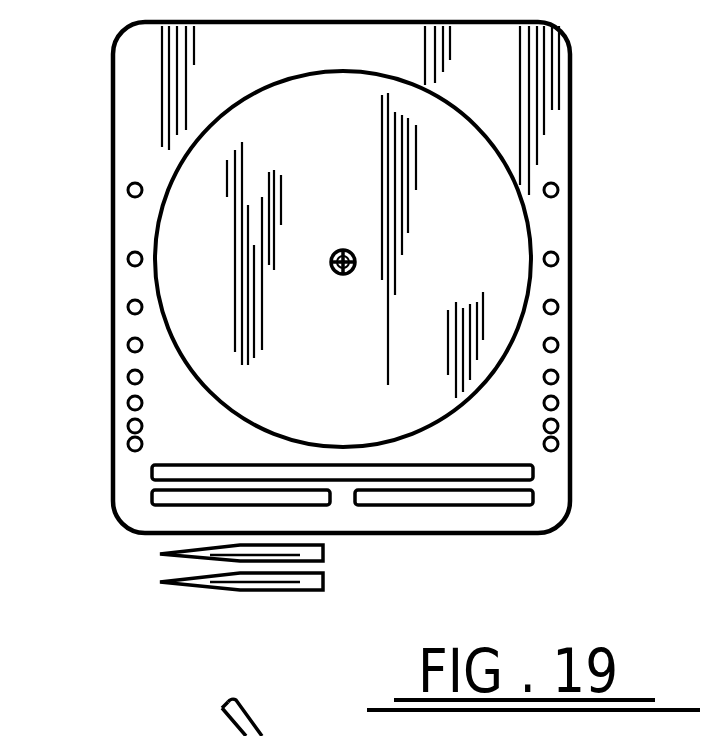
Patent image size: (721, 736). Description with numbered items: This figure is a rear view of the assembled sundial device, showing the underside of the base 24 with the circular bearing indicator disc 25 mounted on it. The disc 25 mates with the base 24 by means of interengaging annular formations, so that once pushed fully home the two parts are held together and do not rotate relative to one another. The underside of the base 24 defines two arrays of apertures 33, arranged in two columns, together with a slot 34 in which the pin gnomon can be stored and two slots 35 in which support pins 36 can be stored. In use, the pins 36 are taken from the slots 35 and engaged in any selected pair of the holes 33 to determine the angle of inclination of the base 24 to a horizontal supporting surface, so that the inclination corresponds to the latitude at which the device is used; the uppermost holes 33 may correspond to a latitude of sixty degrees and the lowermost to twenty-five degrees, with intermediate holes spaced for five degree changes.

The base 24 is at (156, 90).
The circular bearing indicator disc 25 is at (213, 182).
The apertures 33 is at (130, 196).
The slot 34 is at (152, 470).
The slots 35 is at (487, 580).
The support pins 36 is at (303, 555).